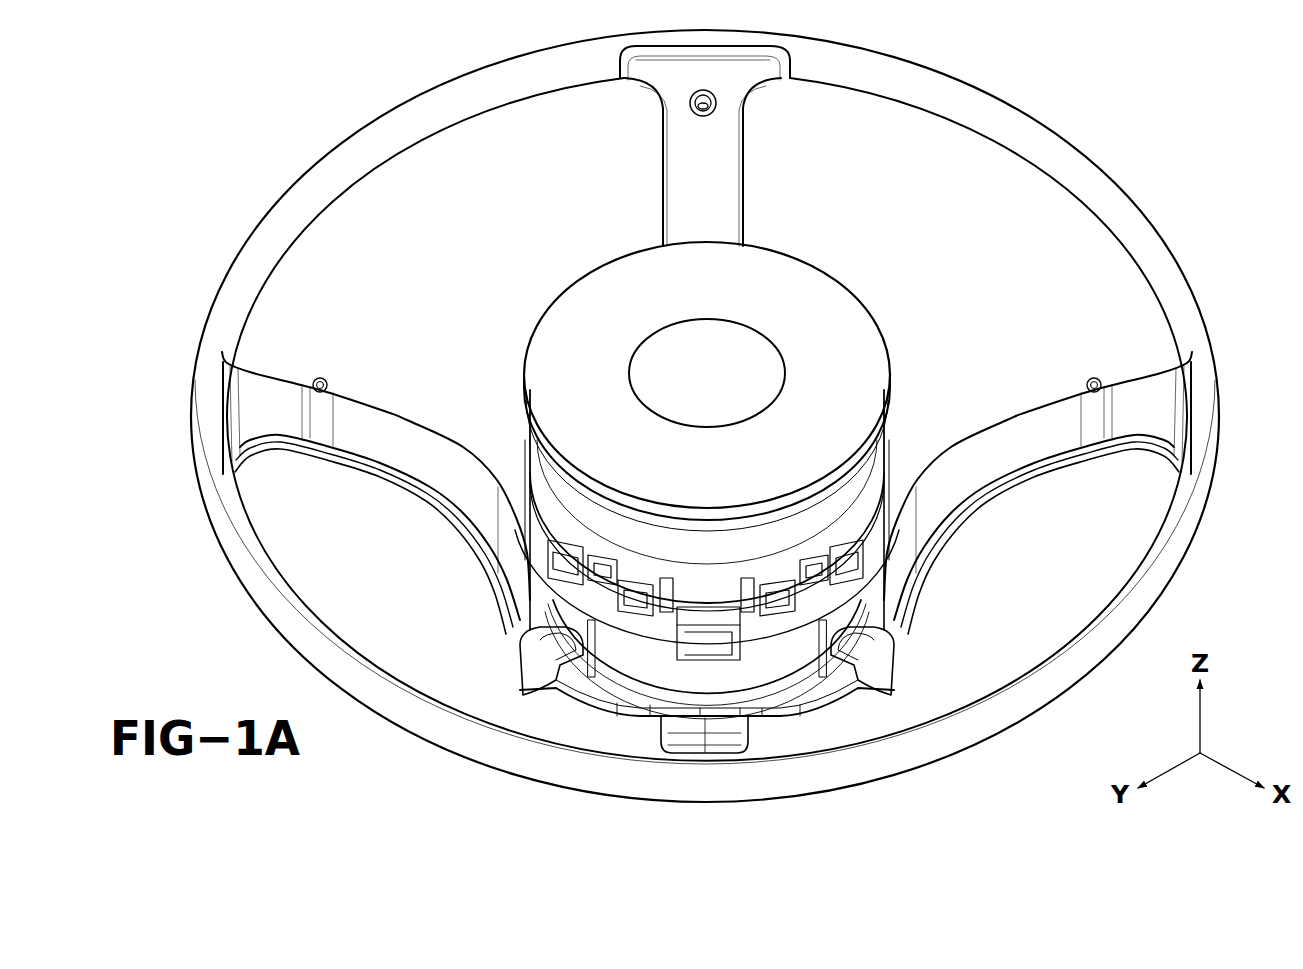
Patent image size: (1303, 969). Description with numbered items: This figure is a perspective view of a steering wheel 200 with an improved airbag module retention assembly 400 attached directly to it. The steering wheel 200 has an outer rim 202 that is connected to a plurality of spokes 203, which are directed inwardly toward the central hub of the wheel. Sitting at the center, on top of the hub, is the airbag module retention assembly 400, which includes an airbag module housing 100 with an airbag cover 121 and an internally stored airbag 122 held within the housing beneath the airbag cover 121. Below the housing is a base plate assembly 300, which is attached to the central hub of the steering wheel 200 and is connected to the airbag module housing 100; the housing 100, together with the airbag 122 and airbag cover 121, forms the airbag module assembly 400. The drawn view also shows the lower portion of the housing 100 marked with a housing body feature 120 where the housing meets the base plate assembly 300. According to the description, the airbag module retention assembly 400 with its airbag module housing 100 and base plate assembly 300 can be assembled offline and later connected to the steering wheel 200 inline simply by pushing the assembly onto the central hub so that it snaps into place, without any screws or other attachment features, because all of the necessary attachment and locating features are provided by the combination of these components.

The steering wheel 200 is at (1200, 155).
The outer rim 202 is at (300, 203).
The spokes 203 is at (725, 187).
The airbag module housing 100 is at (890, 417).
The motor housing body 120 is at (533, 440).
The airbag cover 121 is at (655, 361).
The airbag 122 is at (625, 272).
The airbag module retention assembly 400 is at (537, 320).
The base plate assembly 300 is at (550, 680).